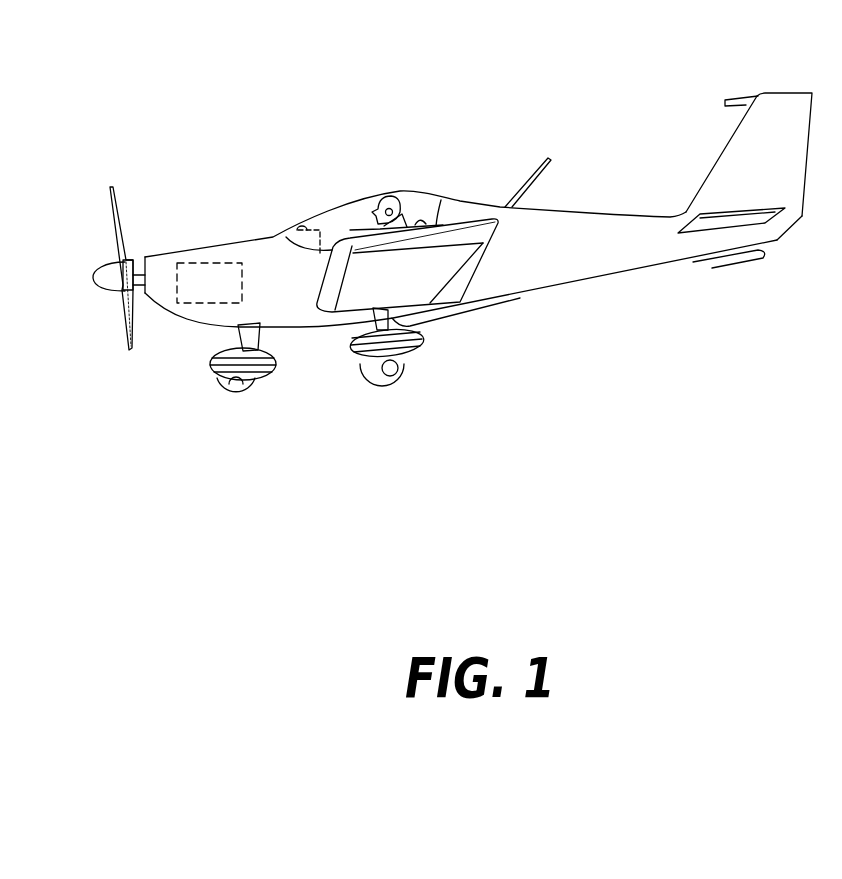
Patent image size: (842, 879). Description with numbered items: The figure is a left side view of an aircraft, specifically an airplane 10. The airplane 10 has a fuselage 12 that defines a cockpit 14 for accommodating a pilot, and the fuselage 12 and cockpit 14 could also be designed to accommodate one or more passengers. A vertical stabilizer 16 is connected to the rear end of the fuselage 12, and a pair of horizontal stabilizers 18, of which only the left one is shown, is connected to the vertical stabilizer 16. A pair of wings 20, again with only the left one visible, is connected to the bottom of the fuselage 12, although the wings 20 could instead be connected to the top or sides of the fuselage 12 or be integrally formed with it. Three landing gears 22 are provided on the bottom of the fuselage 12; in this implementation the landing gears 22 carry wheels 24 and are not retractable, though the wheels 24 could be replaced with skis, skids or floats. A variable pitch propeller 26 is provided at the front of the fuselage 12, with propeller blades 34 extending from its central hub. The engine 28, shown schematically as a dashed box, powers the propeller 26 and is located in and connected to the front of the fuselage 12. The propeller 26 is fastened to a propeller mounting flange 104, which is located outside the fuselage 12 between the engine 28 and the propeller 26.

The airplane 10 is at (316, 182).
The fuselage 12 is at (563, 237).
The cockpit 14 is at (387, 197).
The vertical stabilizer 16 is at (773, 108).
The horizontal stabilizer 18 is at (757, 222).
The wing 20 is at (450, 237).
The landing gear 22 is at (238, 333).
The wheel 24 is at (248, 398).
The variable pitch propeller 26 is at (80, 255).
The engine 28 is at (222, 262).
The propeller blade 34 is at (110, 208).
The propeller mounting flange 104 is at (130, 260).